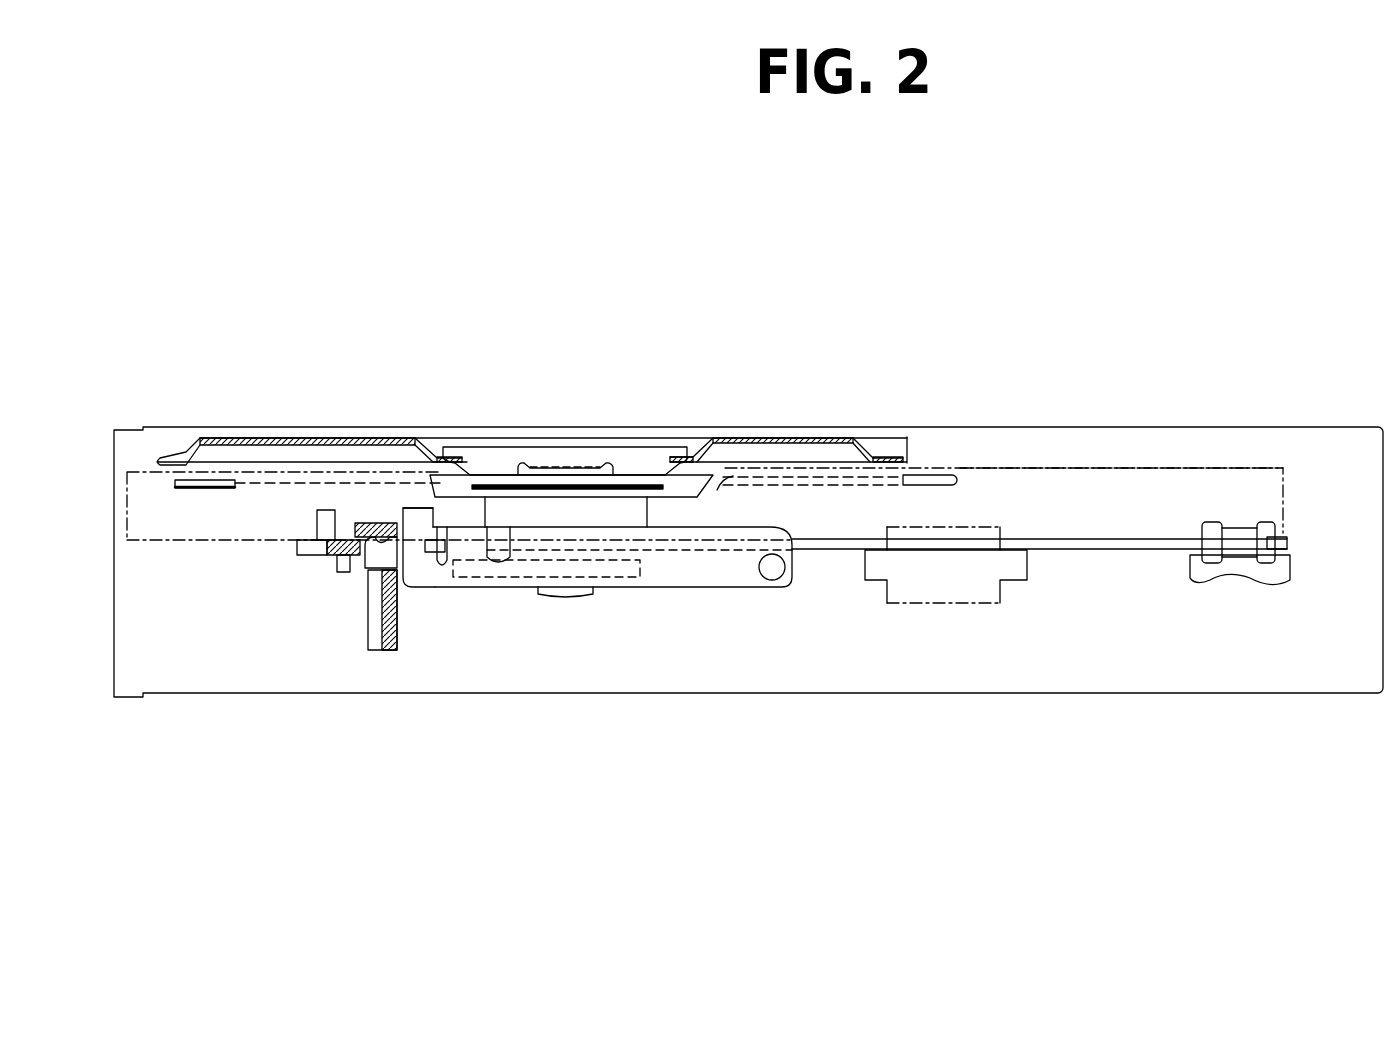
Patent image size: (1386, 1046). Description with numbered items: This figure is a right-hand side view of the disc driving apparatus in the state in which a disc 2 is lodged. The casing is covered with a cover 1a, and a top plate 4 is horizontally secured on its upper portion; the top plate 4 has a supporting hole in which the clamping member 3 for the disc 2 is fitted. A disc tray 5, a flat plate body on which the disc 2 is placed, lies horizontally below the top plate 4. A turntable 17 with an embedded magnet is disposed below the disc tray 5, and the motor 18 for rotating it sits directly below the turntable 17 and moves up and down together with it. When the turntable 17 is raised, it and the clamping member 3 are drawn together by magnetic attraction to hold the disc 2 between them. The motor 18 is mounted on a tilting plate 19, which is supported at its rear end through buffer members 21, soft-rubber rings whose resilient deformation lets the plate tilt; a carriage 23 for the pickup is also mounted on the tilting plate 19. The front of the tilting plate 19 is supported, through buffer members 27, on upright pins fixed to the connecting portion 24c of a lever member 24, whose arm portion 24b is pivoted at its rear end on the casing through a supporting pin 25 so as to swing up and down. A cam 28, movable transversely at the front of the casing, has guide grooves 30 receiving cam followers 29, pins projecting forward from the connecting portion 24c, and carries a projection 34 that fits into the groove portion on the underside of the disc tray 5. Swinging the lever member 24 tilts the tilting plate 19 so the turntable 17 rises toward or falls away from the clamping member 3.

The cover 1a is at (1197, 423).
The disc 2 is at (928, 475).
The clamping member 3 is at (640, 453).
The top plate 4 is at (307, 425).
The disc tray 5 is at (1067, 467).
The turntable 17 is at (537, 488).
The motor 18 is at (597, 512).
The tilting plate 19 is at (1107, 547).
The buffer member 21 is at (1263, 523).
The carriage 23 is at (952, 603).
The lever member 24 is at (428, 580).
The arm portion 24b is at (690, 580).
The connecting portion 24c is at (417, 520).
The supporting pin 25 is at (770, 573).
The buffer member 27 is at (442, 580).
The cam 28 is at (385, 652).
The cam follower 29 is at (365, 563).
The guide groove 30 is at (360, 523).
The projection 34 is at (322, 523).